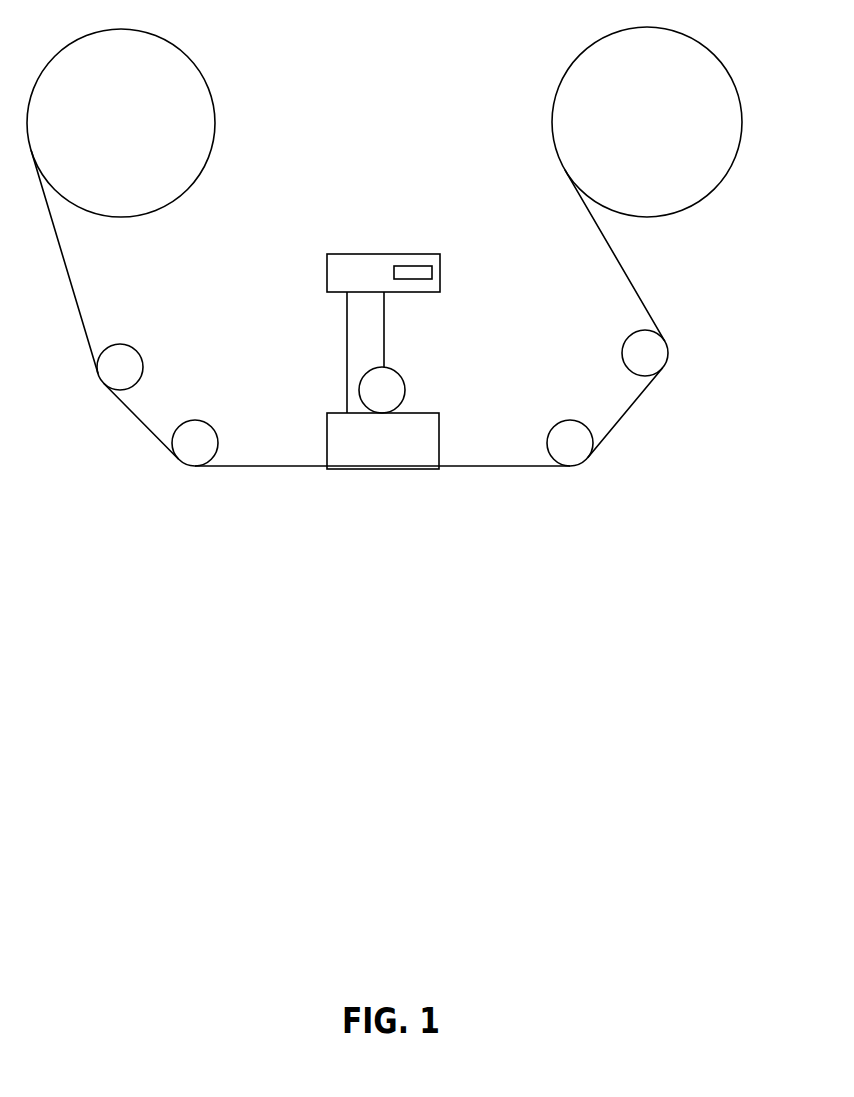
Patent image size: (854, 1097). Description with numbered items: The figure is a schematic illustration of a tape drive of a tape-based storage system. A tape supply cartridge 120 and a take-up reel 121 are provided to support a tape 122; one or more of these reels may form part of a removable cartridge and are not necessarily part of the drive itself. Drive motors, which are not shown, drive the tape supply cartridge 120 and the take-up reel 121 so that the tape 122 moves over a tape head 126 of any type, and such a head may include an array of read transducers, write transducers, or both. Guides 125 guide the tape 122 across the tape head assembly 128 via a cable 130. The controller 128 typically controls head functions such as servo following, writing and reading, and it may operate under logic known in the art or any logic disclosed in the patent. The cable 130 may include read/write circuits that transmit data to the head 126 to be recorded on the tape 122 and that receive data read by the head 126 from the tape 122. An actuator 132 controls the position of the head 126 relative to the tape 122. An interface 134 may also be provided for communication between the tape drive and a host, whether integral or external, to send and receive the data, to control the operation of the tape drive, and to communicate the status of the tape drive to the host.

The tape supply cartridge 120 is at (202, 75).
The take-up reel 121 is at (708, 193).
The tape 122 is at (70, 278).
The guides 125 is at (143, 353).
The tape head 126 is at (326, 437).
The controller 128 is at (348, 253).
The cable 130 is at (346, 330).
The actuator 132 is at (396, 372).
The interface 134 is at (417, 265).